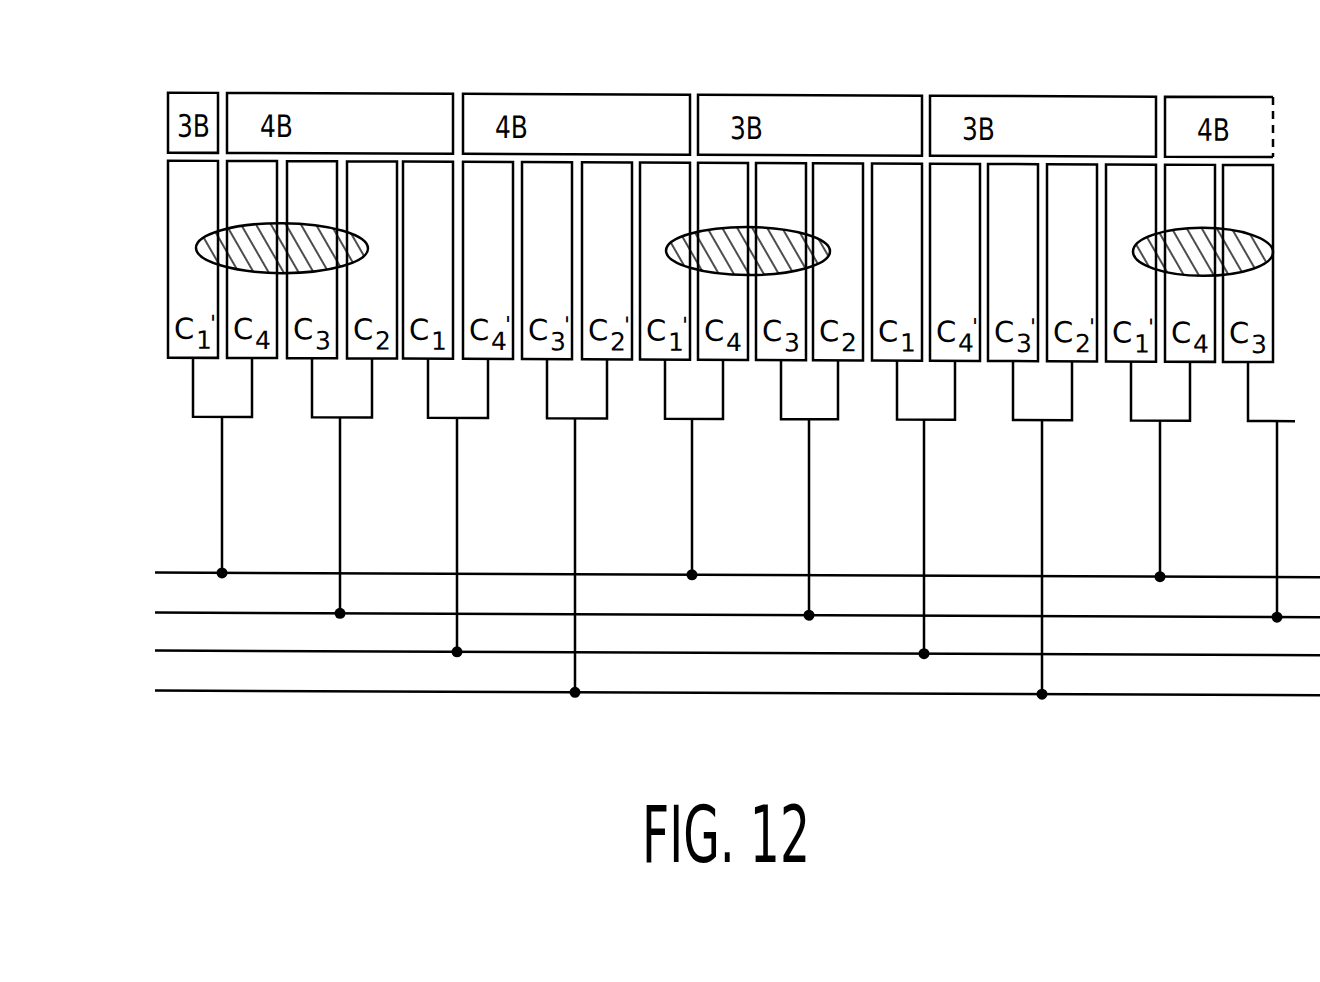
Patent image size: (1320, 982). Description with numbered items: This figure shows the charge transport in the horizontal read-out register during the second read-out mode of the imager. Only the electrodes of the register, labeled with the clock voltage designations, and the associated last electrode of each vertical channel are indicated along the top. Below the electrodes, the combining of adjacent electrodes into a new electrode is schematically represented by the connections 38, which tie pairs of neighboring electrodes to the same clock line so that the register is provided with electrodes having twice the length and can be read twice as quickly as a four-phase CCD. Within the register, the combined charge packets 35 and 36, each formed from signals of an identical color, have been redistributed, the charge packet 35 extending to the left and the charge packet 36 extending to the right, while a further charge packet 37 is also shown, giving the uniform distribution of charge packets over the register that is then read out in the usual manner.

The combined signal 35 is at (322, 235).
The combined signal 36 is at (786, 240).
The further charge packet 37 is at (1248, 230).
The connections 38 is at (192, 401).